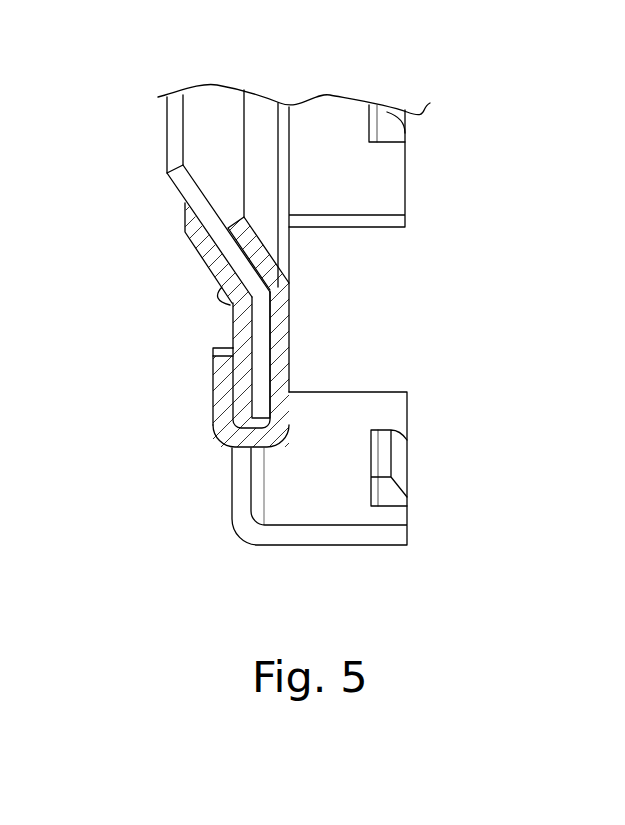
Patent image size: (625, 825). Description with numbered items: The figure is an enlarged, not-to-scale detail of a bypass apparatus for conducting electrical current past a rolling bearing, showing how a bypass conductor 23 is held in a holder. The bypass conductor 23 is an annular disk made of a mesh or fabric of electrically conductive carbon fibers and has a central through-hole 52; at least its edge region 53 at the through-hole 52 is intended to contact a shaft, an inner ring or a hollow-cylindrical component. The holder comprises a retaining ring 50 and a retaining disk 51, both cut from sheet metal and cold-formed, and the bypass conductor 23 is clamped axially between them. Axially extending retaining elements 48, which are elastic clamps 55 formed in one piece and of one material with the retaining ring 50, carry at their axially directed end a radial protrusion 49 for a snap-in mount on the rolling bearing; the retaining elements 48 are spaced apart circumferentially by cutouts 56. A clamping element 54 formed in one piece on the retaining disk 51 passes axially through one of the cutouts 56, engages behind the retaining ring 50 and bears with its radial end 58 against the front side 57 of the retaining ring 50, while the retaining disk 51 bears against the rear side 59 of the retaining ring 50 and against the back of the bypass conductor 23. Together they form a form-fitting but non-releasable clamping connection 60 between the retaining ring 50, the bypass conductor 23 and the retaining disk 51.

The bypass conductor 23 is at (203, 190).
The retaining element 48 is at (364, 311).
The radial protrusion 49 is at (387, 112).
The retaining ring 50 is at (258, 312).
The retaining disk 51 is at (289, 377).
The through-hole 52 is at (168, 117).
The edge region 53 is at (185, 97).
The clamping element 54 is at (228, 447).
The elastic clamp 55 is at (327, 100).
The cutout 56 is at (310, 262).
The front side 57 is at (232, 327).
The radial end 58 is at (212, 353).
The rear side 59 is at (280, 343).
The clamping connection 60 is at (213, 404).